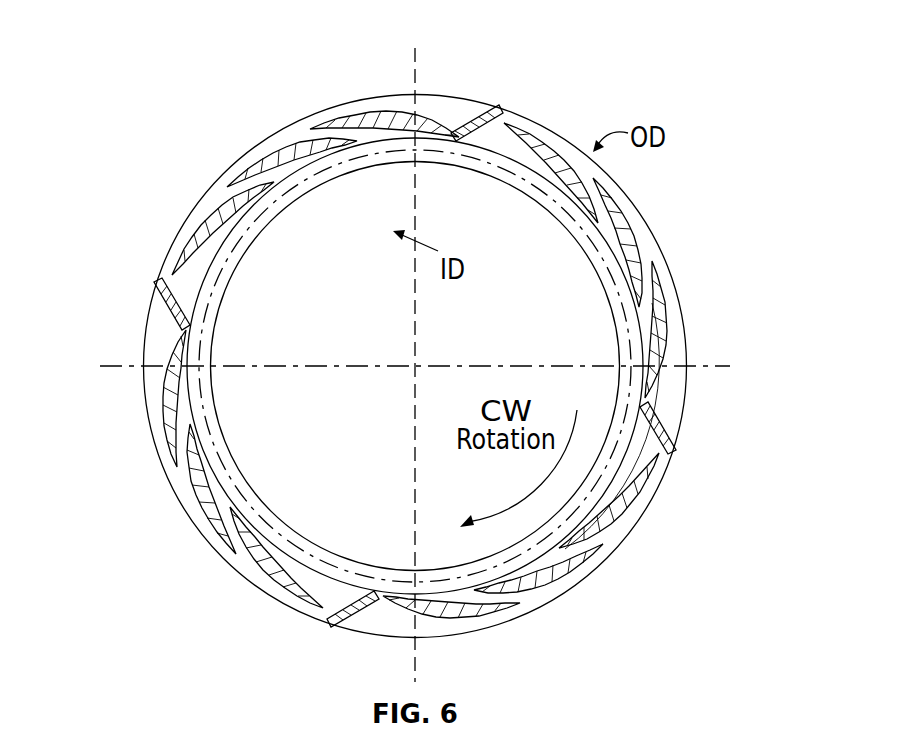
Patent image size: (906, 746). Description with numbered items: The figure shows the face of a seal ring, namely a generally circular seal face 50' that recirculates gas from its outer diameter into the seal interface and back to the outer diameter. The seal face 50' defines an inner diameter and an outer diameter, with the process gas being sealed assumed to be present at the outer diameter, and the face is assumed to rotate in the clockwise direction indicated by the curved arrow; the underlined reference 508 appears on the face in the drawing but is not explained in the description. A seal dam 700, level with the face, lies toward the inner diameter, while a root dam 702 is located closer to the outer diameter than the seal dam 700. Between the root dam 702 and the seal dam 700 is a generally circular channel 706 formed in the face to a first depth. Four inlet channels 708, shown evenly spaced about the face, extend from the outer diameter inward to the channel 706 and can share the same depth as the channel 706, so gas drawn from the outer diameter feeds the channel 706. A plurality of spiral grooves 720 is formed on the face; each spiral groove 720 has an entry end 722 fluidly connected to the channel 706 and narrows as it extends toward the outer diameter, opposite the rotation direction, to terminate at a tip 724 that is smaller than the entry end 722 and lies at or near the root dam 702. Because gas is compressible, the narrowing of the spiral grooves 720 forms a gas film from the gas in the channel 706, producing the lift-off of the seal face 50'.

The seal face 50' is at (387, 326).
The outer case / shroud 508 is at (402, 549).
The seal dam 700 is at (233, 497).
The root dam 702 is at (376, 100).
The channel 706 is at (637, 457).
The inlet channel 708 is at (343, 652).
The spiral groove 720 is at (647, 487).
The entry end 722 is at (263, 537).
The tip 724 is at (283, 587).